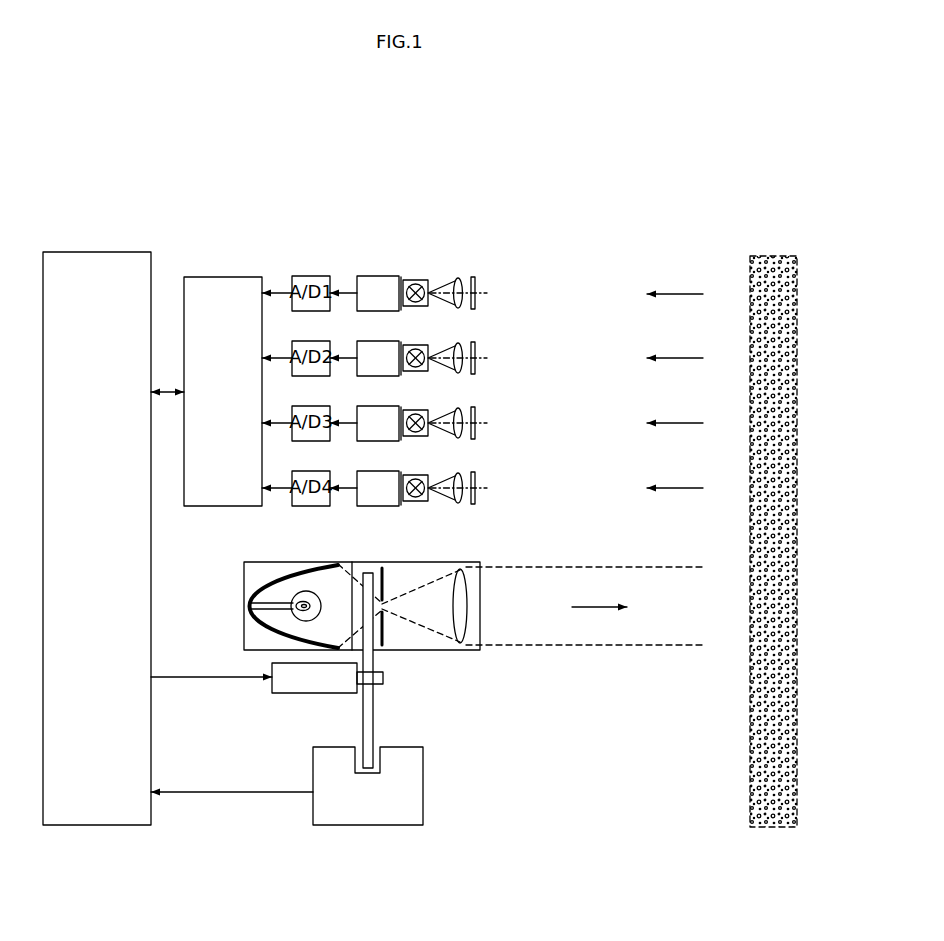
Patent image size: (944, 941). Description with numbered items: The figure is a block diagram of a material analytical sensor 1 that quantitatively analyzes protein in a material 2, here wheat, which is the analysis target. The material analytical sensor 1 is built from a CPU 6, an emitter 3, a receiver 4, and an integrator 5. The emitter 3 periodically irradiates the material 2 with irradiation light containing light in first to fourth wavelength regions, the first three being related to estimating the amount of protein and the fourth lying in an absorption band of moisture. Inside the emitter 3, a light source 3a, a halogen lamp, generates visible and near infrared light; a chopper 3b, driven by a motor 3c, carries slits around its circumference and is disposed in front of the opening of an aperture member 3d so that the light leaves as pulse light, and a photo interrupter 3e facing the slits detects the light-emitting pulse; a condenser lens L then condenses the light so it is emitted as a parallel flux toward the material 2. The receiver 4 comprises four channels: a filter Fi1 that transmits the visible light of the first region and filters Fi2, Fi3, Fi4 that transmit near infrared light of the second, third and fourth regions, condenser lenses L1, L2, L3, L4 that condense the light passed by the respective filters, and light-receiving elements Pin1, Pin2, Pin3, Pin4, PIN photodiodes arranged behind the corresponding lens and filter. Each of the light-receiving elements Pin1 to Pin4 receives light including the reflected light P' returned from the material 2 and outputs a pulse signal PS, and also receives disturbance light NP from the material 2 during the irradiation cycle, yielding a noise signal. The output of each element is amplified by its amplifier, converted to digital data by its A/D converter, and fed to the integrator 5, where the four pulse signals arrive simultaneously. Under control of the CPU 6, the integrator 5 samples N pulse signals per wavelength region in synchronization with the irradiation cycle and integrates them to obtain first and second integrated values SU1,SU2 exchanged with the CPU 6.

The material analytical sensor 1 is at (343, 254).
The material 2 is at (772, 256).
The emitter 3 is at (482, 558).
The light source 3a is at (283, 575).
The chopper 3b is at (375, 710).
The motor 3c is at (302, 694).
The aperture member 3d is at (388, 626).
The photo interrupter 3e is at (425, 790).
The receiver 4 is at (370, 274).
The integrator 5 is at (223, 277).
The CPU 6 is at (93, 252).
The condenser lens L is at (466, 626).
The condenser lens L1 is at (456, 279).
The condenser lens L2 is at (462, 344).
The condenser lens L3 is at (462, 409).
The condenser lens L4 is at (462, 474).
The filter Fi1 is at (487, 294).
The filter Fi2 is at (487, 359).
The filter Fi3 is at (487, 424).
The filter Fi4 is at (487, 489).
The light-receiving element Pin1 is at (412, 280).
The light-receiving element Pin2 is at (430, 347).
The light-receiving element Pin3 is at (430, 412).
The light-receiving element Pin4 is at (430, 477).
The pulse signal PS is at (278, 278).
The first and second integrated values SU1,SU2 is at (172, 388).
The reflected light P' is at (684, 311).
The disturbance light NP is at (672, 359).